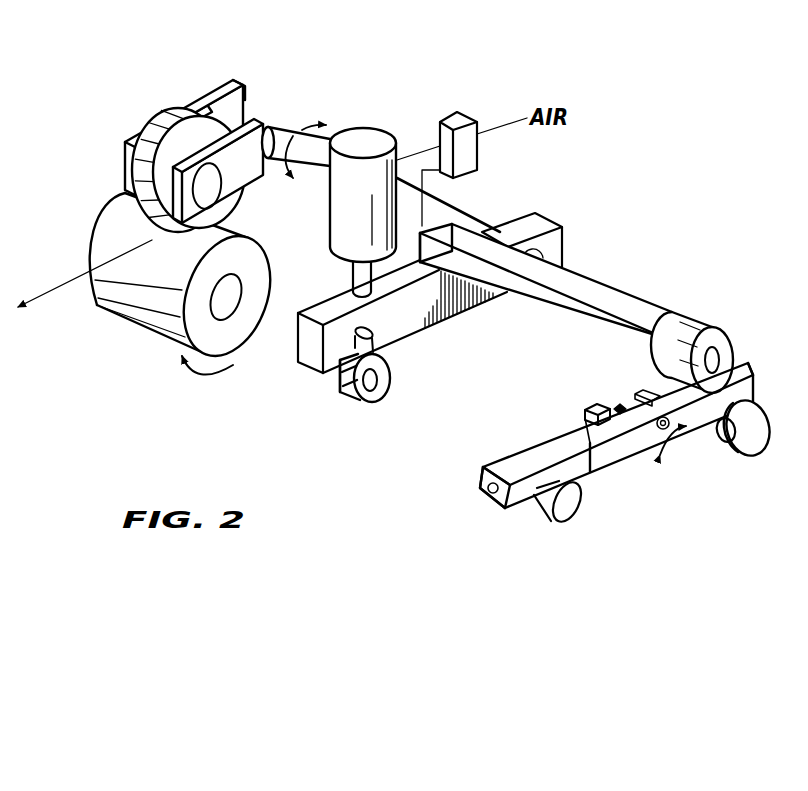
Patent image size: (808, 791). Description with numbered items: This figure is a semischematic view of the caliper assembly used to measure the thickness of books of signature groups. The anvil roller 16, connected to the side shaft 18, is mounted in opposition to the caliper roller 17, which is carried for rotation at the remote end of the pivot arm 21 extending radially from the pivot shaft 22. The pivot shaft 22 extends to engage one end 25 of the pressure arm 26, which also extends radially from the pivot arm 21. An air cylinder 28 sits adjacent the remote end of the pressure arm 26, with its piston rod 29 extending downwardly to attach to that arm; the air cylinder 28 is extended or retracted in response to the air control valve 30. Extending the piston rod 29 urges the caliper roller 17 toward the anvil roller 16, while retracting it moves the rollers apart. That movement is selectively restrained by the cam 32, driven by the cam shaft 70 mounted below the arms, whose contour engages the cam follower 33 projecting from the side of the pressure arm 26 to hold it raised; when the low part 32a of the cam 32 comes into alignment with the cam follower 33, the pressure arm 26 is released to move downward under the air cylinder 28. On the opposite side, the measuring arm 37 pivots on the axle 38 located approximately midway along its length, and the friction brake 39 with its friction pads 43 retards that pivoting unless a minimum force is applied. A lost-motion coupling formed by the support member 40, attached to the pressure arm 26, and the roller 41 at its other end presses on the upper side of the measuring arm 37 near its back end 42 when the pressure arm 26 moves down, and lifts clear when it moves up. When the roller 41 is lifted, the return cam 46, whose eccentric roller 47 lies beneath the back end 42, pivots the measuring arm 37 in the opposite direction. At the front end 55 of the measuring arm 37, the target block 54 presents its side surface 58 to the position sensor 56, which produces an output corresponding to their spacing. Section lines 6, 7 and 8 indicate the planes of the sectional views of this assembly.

The section line 6- 6 is at (652, 280).
The section line 7- 7 is at (662, 295).
The section line 8- 8 is at (399, 530).
The anvil roller 16 is at (113, 235).
The caliper roller 17 is at (173, 127).
The side shaft 18 is at (229, 303).
The pivot arm 21 is at (178, 133).
The pivot shaft 22 is at (317, 157).
The end of pressure arm 25 is at (537, 223).
The pressure arm 26 is at (511, 212).
The air cylinder 28 is at (360, 130).
The piston rod 29 is at (360, 277).
The air control valve 30 is at (455, 122).
The cam 32 is at (378, 402).
The low part of cam 32a is at (340, 378).
The cam follower 33 is at (363, 330).
The measuring arm 37 is at (399, 492).
The axle 38 is at (655, 430).
The friction brake 39 is at (618, 405).
The support member 40 is at (563, 282).
The roller 41 is at (705, 327).
The back end of measuring arm 42 is at (757, 383).
The friction pads 43 is at (597, 403).
The return cam 46 is at (752, 442).
The roller of return cam 47 is at (717, 437).
The target block 54 is at (498, 500).
The front end of measuring arm 55 is at (608, 455).
The position sensor 56 is at (548, 508).
The side surface of target block 58 is at (518, 512).
The cam shaft 70 is at (375, 382).